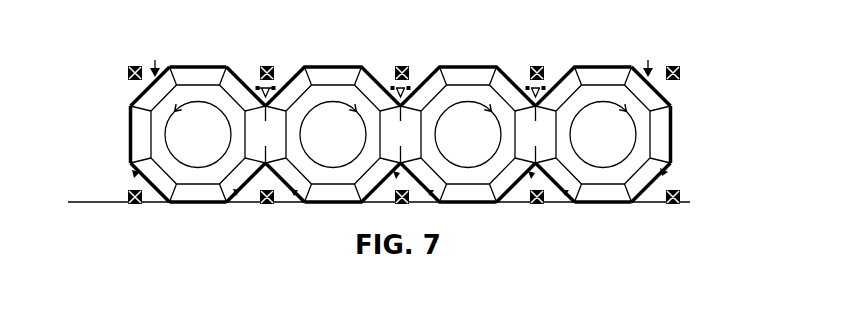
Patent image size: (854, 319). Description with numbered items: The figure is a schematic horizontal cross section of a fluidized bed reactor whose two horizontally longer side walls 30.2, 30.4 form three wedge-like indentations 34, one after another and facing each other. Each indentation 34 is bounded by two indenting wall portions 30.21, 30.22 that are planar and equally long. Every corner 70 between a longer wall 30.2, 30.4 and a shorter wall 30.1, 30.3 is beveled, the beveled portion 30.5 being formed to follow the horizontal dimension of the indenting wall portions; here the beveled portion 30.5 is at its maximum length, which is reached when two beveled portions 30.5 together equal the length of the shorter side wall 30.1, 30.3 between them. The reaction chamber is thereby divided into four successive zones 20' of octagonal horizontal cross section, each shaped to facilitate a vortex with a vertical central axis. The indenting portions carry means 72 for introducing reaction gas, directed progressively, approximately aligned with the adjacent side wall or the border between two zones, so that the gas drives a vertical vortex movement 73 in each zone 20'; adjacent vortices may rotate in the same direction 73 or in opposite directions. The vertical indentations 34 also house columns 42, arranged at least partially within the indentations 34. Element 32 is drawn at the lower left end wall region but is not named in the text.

The corner 70 is at (154, 70).
The means for introducing reaction gas 72 is at (255, 92).
The indentation 34 is at (258, 78).
The column 42 is at (128, 68).
The end connector box 32 is at (155, 203).
The longer side wall 30.4 is at (202, 66).
The shorter side wall 30.3 is at (130, 133).
The beveled portion 30.5 is at (145, 92).
The shorter side wall 30.1 is at (672, 133).
The longer side wall 30.2 is at (608, 203).
The indenting wall portion 30.21 is at (242, 205).
The indenting wall portion 30.22 is at (283, 205).
The vertical vortex movement 73 is at (301, 139).
The zone 20' is at (400, 135).